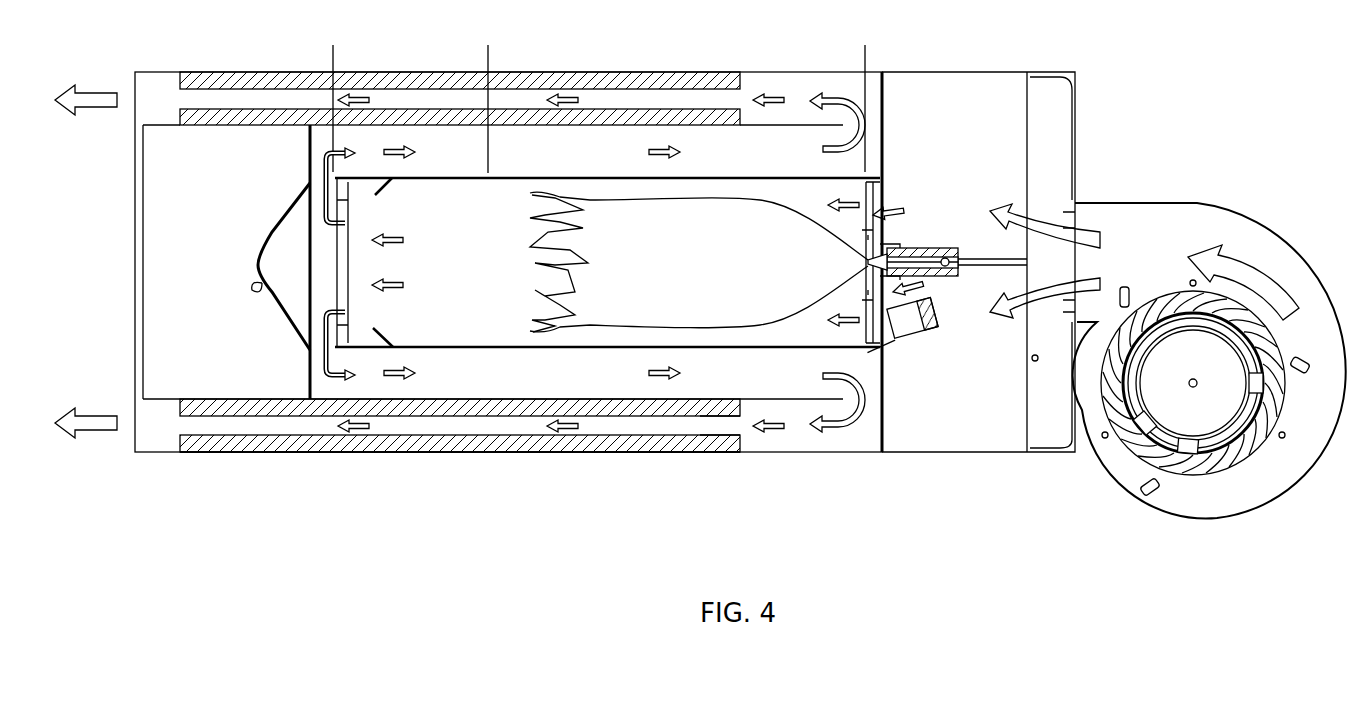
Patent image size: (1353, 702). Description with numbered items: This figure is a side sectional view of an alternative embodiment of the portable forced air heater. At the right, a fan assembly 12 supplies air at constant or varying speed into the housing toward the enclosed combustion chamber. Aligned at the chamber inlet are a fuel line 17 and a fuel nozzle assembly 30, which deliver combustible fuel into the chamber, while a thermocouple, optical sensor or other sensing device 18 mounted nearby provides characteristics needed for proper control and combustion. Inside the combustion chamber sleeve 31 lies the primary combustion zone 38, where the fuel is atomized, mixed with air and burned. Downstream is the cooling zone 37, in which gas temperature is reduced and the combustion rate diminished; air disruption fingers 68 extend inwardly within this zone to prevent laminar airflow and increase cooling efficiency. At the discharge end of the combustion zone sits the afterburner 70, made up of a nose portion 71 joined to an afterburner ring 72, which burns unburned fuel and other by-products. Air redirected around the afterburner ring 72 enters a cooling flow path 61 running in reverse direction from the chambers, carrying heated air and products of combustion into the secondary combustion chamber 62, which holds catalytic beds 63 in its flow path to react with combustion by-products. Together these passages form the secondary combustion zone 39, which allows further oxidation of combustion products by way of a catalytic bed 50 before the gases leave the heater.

The fan assembly 12 is at (1260, 219).
The fuel line 17 is at (987, 260).
The sensing device 18 is at (937, 305).
The fuel nozzle assembly 30 is at (866, 262).
The combustion chamber sleeve 31 is at (496, 346).
The cooling zone 37 is at (333, 72).
The primary combustion zone 38 is at (489, 72).
The secondary combustion zone 39 is at (180, 455).
The catalytic bed 50 is at (225, 118).
The cooling flow path 61 is at (598, 390).
The secondary combustion chamber 62 is at (737, 425).
The catalytic beds 63 is at (497, 445).
The air disruption fingers 68 is at (391, 184).
The afterburner 70 is at (280, 224).
The nose portion 71 is at (260, 268).
The afterburner ring 72 is at (352, 322).